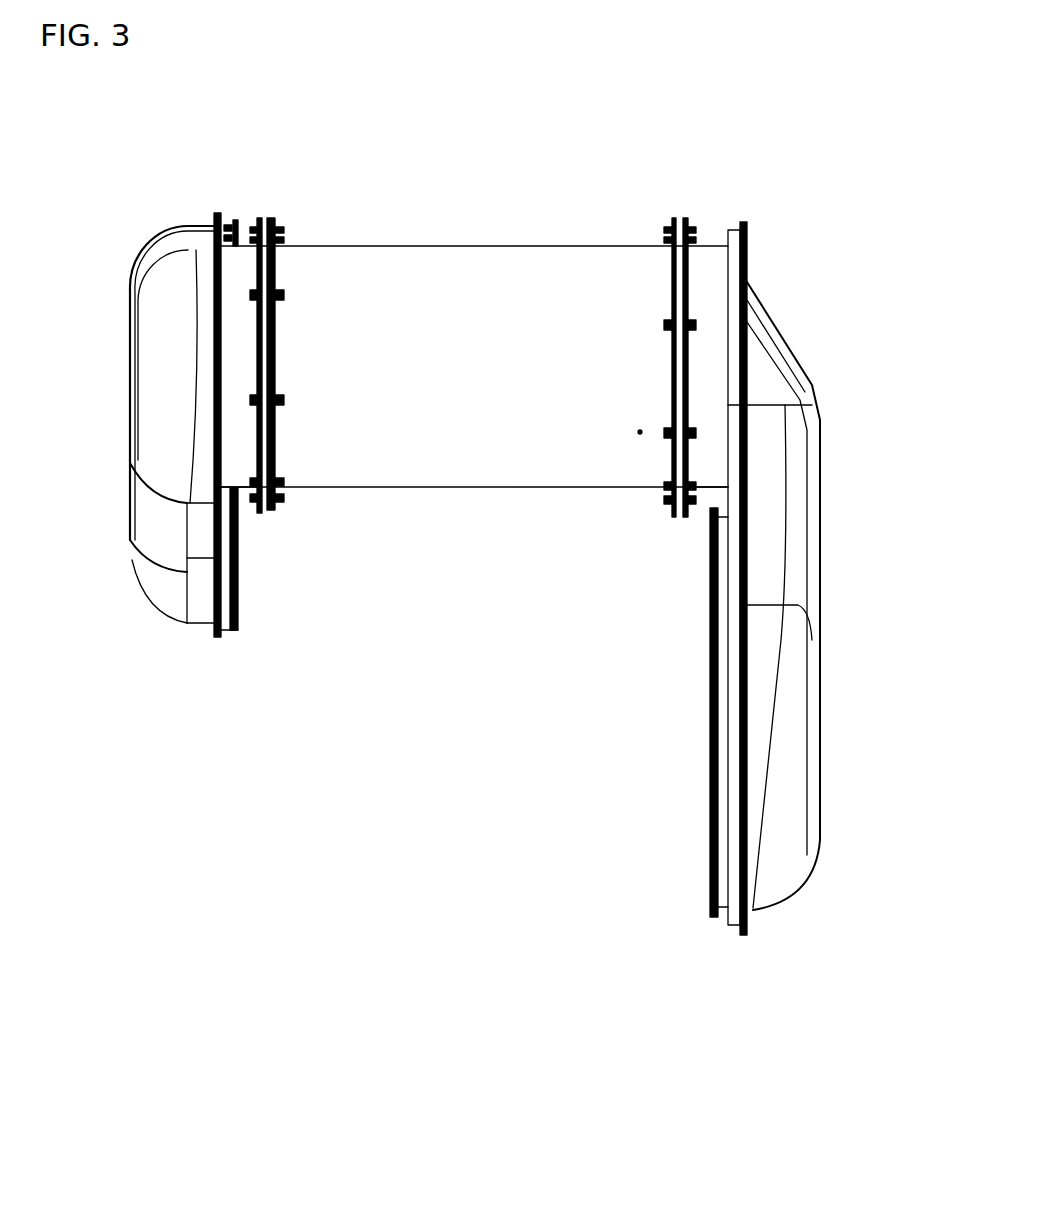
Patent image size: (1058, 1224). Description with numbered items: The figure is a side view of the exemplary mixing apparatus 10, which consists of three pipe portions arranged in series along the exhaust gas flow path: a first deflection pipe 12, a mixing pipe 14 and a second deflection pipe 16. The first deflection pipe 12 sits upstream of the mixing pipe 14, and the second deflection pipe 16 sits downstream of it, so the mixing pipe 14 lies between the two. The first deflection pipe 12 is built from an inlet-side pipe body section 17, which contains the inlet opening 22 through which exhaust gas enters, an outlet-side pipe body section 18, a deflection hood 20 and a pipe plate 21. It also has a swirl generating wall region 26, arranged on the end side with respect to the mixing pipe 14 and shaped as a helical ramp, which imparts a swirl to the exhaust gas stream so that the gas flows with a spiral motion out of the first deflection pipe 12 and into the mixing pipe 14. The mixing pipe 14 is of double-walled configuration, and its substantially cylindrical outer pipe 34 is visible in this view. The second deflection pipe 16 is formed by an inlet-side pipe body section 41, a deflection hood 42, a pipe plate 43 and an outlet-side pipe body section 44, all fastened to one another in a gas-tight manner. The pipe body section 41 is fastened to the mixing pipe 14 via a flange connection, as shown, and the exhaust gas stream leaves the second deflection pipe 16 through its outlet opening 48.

The mixing apparatus 10 is at (493, 117).
The first deflection pipe 12 is at (630, 940).
The mixing pipe 14 is at (440, 225).
The second deflection pipe 16 is at (330, 640).
The inlet-side pipe body section 17 is at (718, 910).
The outlet-side pipe body section 18 is at (710, 258).
The deflection hood 20 is at (788, 722).
The pipe plate 21 is at (728, 490).
The inlet opening 22 is at (708, 745).
The swirl generating wall region 26 is at (778, 322).
The outer pipe 34 is at (380, 470).
The inlet-side pipe body section 41 is at (222, 272).
The deflection hood 42 is at (162, 280).
The pipe plate 43 is at (228, 498).
The outlet-side pipe body section 44 is at (233, 635).
The outlet opening 48 is at (240, 548).